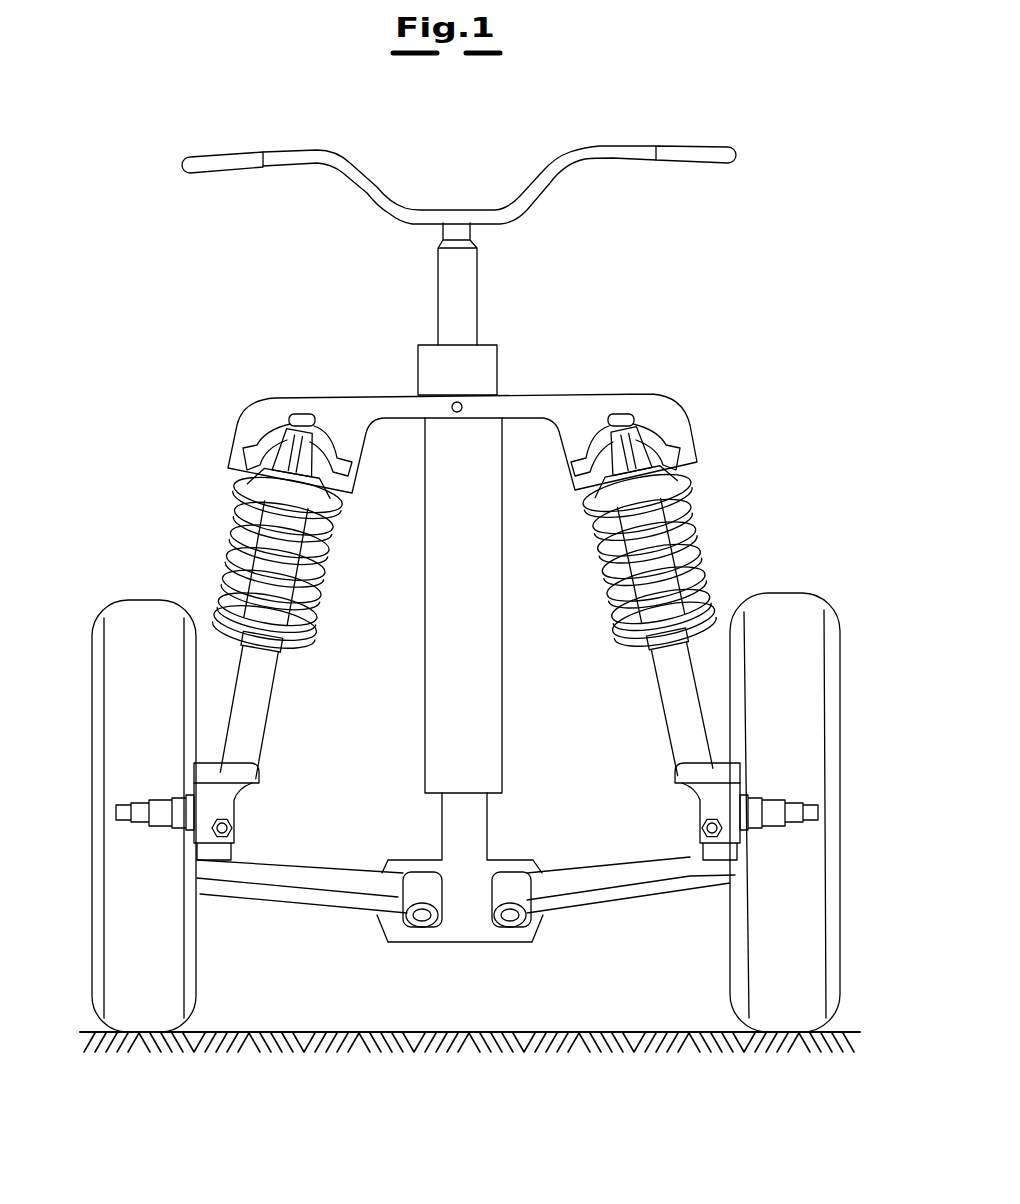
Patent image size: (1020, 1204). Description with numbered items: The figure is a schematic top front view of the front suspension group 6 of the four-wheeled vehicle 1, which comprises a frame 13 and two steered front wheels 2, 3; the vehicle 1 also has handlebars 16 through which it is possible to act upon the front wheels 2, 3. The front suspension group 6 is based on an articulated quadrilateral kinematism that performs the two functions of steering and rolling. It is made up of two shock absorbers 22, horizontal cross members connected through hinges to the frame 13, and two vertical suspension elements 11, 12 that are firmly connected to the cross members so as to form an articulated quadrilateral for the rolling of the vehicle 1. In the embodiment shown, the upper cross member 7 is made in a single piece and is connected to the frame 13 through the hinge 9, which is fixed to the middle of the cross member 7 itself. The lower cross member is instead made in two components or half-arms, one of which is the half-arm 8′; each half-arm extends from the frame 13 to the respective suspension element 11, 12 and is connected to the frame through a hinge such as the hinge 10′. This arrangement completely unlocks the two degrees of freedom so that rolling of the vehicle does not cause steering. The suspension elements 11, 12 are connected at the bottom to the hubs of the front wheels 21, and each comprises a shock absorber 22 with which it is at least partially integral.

The four-wheeled vehicle 1 is at (188, 323).
The steered front wheel 2 is at (115, 688).
The steered front wheel 3 is at (805, 622).
The front suspension group 6 is at (700, 419).
The upper cross member 7 is at (602, 394).
The half-arm of the lower cross member 8′ is at (326, 878).
The hinge 9 is at (452, 413).
The hinge 10′ is at (425, 878).
The vertical suspension element 11 is at (710, 633).
The vertical suspension element 12 is at (212, 605).
The frame 13 is at (483, 368).
The handlebars 16 is at (608, 150).
The hub of the front wheel 21 is at (152, 823).
The shock absorber 22 is at (238, 519).